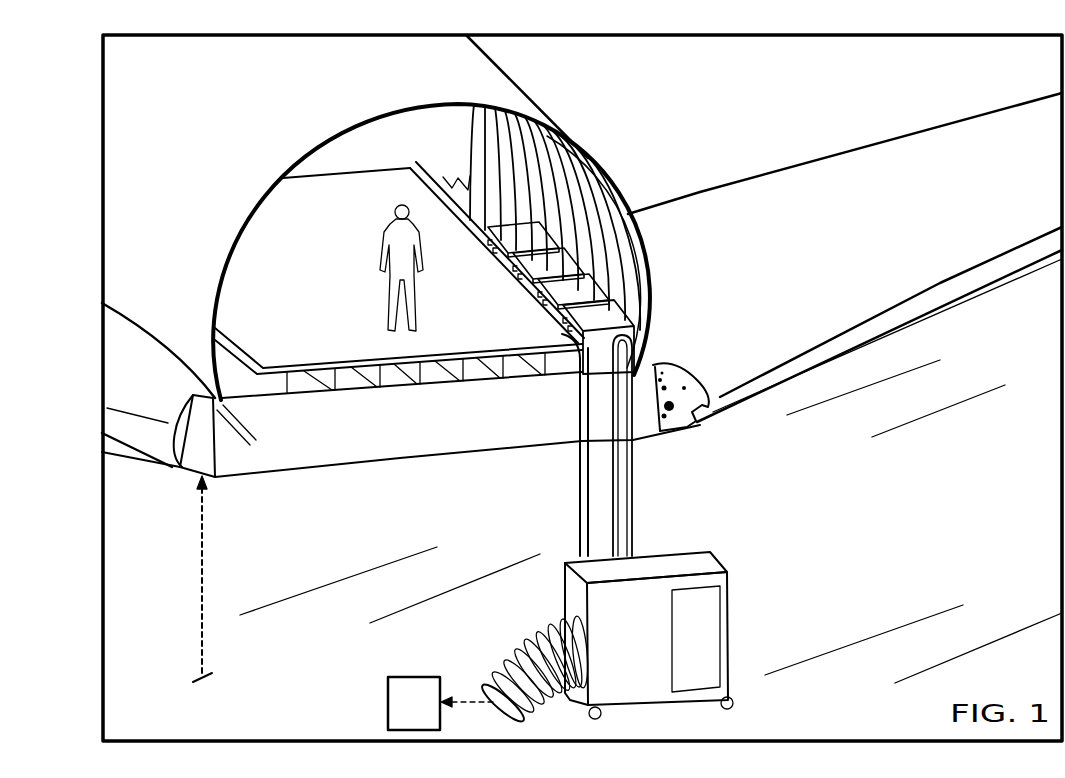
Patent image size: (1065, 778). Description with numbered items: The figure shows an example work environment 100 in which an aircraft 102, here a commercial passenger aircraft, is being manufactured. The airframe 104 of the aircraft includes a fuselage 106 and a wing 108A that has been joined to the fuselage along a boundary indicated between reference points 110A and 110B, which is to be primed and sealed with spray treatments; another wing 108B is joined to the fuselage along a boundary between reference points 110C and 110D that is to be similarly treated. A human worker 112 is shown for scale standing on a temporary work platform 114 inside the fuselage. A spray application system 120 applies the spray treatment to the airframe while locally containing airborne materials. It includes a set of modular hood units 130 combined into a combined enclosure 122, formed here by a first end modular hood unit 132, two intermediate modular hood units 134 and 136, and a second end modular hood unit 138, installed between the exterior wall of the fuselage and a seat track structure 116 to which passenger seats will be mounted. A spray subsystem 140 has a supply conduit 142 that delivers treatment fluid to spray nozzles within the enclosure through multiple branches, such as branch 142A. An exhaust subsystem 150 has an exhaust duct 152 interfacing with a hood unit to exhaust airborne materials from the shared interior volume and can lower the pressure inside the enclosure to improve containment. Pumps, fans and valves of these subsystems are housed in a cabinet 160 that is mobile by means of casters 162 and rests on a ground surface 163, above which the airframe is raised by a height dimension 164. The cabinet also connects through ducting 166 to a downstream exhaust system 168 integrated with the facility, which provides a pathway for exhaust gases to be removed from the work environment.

The work environment 100 is at (322, 199).
The aircraft 102 is at (669, 123).
The airframe 104 is at (593, 157).
The fuselage 106 is at (502, 97).
The wing 108A is at (792, 185).
The wing 108B is at (127, 450).
The boundary reference point 110A is at (602, 382).
The boundary reference point 110B is at (482, 220).
The boundary reference point 110C is at (221, 422).
The boundary reference point 110D is at (150, 298).
The human worker 112 is at (388, 235).
The temporary work platform 114 is at (378, 185).
The seat track structure 116 is at (573, 368).
The spray application system 120 is at (827, 592).
The combined enclosure 122 is at (530, 282).
The modular hood units 130 is at (527, 309).
The first end modular hood unit 132 is at (600, 310).
The intermediate modular hood unit 134 is at (575, 285).
The intermediate modular hood unit 136 is at (540, 252).
The second end modular hood unit 138 is at (517, 237).
The spray subsystem 140 is at (544, 580).
The supply conduit 142 is at (585, 507).
The branch 142A is at (485, 243).
The exhaust subsystem 150 is at (764, 600).
The exhaust duct 152 is at (623, 515).
The cabinet 160 is at (710, 563).
The casters 162 is at (720, 705).
The ground surface 163 is at (235, 707).
The height dimension 164 is at (204, 575).
The ducting 166 is at (500, 675).
The exhaust system 168 is at (429, 713).